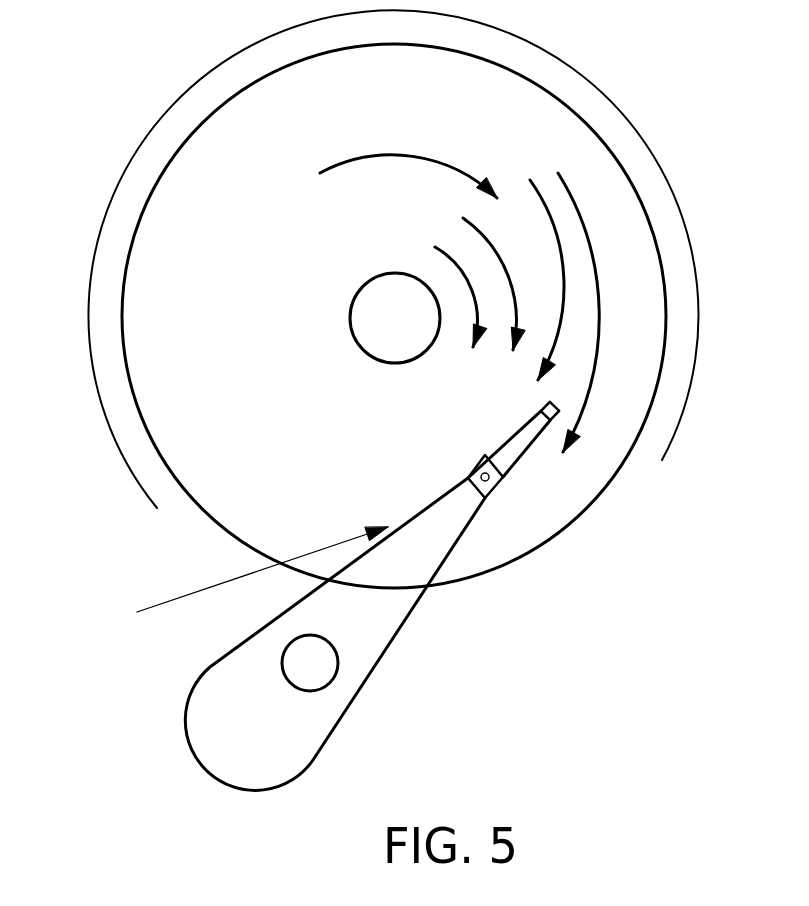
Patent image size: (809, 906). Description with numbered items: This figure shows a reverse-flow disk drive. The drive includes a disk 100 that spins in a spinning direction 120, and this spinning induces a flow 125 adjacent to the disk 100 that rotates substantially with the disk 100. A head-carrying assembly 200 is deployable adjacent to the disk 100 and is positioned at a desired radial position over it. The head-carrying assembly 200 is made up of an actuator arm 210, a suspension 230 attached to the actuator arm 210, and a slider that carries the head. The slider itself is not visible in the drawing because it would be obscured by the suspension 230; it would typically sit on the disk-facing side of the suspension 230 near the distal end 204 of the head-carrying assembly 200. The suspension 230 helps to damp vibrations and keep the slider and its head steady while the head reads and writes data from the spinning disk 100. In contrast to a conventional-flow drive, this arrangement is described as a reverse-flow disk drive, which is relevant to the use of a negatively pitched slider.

The disk 100 is at (607, 145).
The spinning direction 120 is at (348, 161).
The flow 125 is at (600, 312).
The head-carrying assembly 200 is at (137, 612).
The distal end 204 is at (523, 416).
The actuator arm 210 is at (363, 620).
The suspension 230 is at (492, 452).